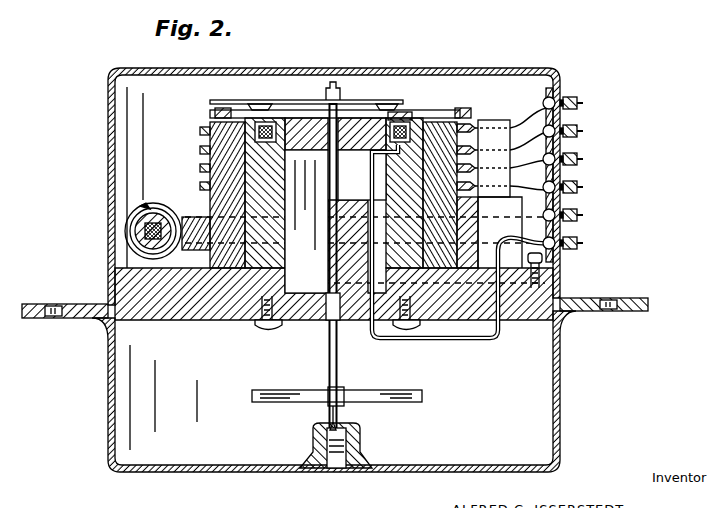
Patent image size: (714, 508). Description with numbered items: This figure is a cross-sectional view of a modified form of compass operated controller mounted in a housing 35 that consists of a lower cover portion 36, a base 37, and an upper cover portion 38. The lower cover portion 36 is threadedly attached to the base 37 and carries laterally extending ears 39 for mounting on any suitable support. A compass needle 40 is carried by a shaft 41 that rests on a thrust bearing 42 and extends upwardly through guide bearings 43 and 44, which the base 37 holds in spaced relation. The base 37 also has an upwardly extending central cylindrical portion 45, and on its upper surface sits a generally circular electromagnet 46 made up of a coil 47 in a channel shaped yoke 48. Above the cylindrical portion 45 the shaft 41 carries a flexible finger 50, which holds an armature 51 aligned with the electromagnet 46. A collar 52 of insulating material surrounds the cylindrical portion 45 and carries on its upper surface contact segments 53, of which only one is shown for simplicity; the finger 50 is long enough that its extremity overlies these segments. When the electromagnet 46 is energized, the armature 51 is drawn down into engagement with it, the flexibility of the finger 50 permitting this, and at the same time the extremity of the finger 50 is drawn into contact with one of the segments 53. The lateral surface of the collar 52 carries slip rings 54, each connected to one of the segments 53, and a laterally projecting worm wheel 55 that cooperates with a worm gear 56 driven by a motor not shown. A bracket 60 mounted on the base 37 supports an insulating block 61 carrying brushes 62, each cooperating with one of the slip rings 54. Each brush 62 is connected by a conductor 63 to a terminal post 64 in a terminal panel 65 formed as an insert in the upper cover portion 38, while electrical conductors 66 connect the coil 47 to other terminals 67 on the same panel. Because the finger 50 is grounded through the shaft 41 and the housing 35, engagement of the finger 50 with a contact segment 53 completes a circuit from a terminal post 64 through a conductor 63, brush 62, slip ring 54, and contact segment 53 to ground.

The housing 35 is at (592, 150).
The lower cover portion 36 is at (106, 382).
The base 37 is at (106, 300).
The upper cover portion 38 is at (106, 113).
The laterally extending ears 39 is at (36, 318).
The compass needle 40 is at (405, 398).
The shaft 41 is at (340, 357).
The thrust bearing 42 is at (338, 462).
The guide bearing 43 is at (326, 326).
The guide bearing 44 is at (326, 152).
The central cylindrical portion 45 is at (434, 120).
The electromagnet 46 is at (416, 104).
The coil 47 is at (394, 112).
The channel shaped yoke 48 is at (396, 124).
The finger 50 is at (326, 100).
The armature 51 is at (258, 104).
The collar 52 is at (210, 206).
The contact segments 53 is at (220, 112).
The slip rings 54 is at (200, 150).
The worm wheel 55 is at (205, 250).
The worm gear 56 is at (148, 204).
The bracket 60 is at (484, 248).
The insulating block 61 is at (494, 122).
The brushes 62 is at (468, 124).
The conductor 63 is at (522, 140).
The terminal post 64 is at (578, 108).
The terminal panel 65 is at (556, 257).
The electrical conductors 66 is at (474, 336).
The terminals 67 is at (582, 218).